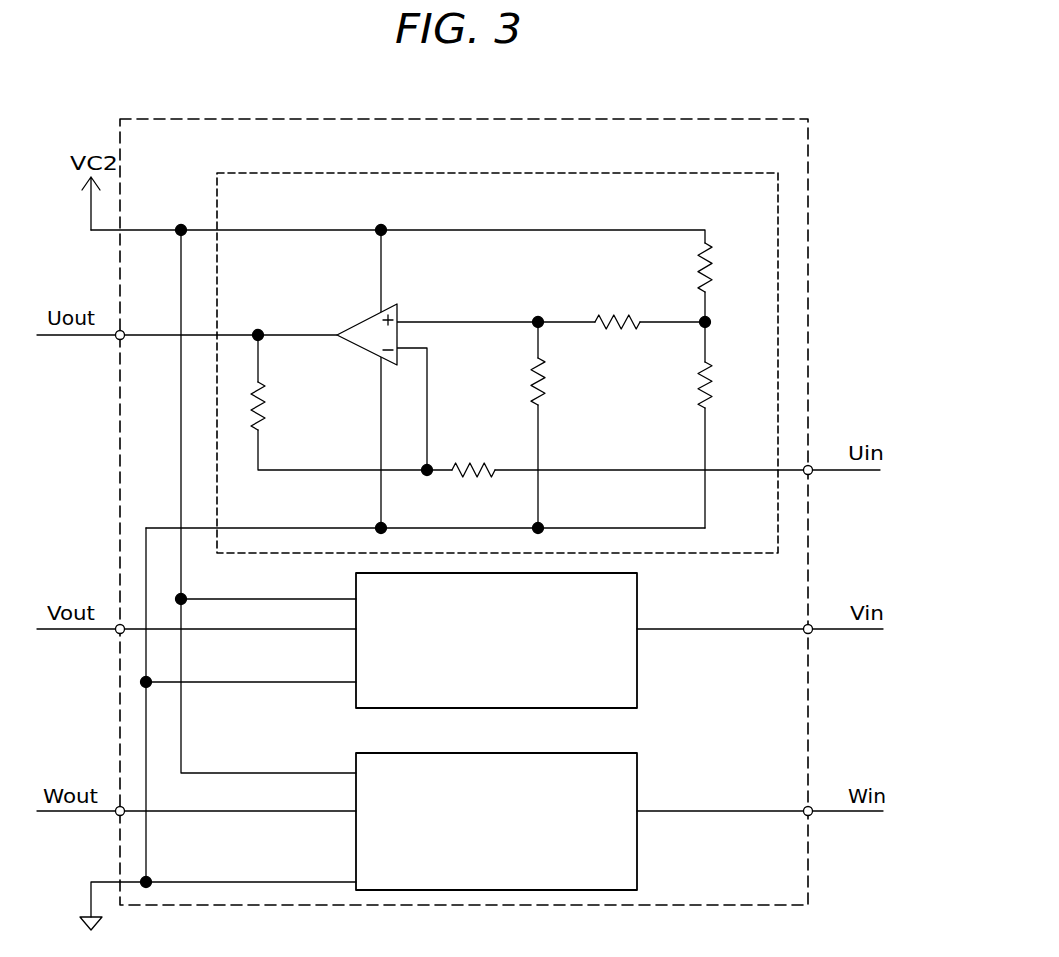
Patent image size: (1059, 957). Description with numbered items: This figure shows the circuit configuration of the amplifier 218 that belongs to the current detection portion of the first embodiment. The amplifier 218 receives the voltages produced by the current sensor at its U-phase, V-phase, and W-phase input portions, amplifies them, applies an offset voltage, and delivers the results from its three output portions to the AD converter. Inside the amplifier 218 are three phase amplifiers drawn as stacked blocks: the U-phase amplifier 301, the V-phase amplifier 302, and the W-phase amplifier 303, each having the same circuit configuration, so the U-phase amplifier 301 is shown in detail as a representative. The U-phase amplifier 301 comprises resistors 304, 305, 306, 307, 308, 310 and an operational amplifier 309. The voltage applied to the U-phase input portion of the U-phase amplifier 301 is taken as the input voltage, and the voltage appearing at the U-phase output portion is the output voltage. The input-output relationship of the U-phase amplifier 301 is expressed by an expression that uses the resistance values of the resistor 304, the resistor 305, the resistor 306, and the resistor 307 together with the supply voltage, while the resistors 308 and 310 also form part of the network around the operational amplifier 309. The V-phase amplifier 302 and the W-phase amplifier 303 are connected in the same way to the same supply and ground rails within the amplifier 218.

The amplifier 218 is at (650, 119).
The U-phase amplifier 301 is at (667, 173).
The V-phase amplifier 302 is at (640, 603).
The W-phase amplifier 303 is at (640, 778).
The resistor 304 is at (712, 275).
The resistor 305 is at (712, 390).
The resistor 306 is at (622, 318).
The resistor 307 is at (545, 384).
The resistor 308 is at (478, 464).
The operational amplifier 309 is at (366, 318).
The resistor 310 is at (265, 406).